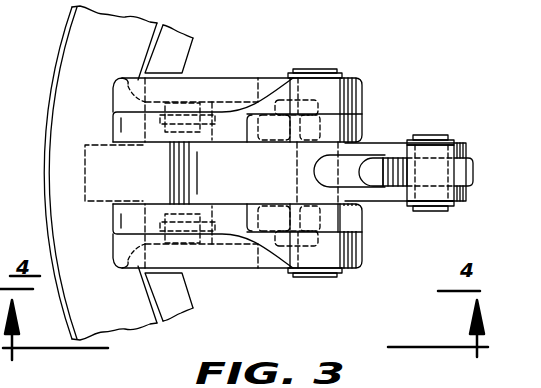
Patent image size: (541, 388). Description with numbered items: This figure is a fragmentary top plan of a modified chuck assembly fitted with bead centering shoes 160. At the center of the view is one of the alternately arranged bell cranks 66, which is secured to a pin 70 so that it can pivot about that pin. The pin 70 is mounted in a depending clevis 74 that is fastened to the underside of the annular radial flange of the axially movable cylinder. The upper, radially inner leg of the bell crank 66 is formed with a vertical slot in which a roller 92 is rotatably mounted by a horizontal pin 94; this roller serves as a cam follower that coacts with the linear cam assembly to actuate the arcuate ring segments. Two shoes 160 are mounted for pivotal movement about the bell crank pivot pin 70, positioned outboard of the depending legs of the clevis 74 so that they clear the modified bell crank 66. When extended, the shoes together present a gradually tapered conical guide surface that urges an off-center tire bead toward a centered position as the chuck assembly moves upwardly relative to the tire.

The bead centering shoe 160 is at (231, 118).
The bell crank 66 is at (383, 144).
The horizontal pin 94 is at (432, 135).
The roller 92 is at (475, 170).
The clevis 74 is at (361, 217).
The pin 70 is at (334, 276).